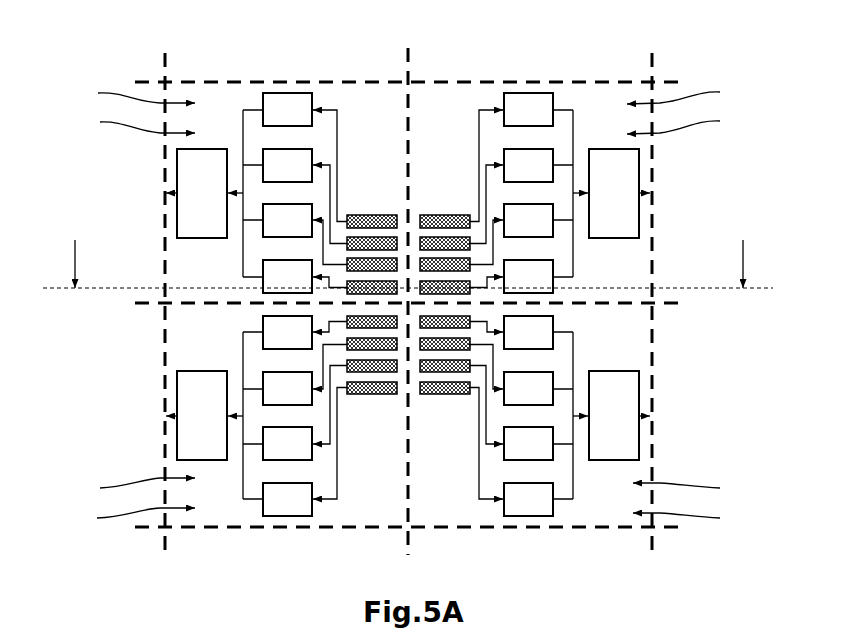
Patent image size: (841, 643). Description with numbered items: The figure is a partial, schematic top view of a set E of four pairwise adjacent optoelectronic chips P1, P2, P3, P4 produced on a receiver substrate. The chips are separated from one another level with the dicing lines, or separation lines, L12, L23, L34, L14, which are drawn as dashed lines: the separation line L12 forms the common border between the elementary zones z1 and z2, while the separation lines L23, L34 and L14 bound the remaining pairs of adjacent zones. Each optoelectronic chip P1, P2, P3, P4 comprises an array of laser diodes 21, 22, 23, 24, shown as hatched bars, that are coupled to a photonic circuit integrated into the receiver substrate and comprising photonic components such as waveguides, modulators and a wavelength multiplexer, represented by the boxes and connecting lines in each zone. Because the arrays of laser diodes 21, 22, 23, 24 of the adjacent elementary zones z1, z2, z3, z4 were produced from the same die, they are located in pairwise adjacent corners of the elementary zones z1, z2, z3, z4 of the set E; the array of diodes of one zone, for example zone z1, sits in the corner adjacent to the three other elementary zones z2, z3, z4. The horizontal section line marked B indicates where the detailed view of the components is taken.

The set of pairwise adjacent optoelectronic chips E is at (133, 40).
The laser diode 21 is at (372, 214).
The laser diode 22 is at (445, 214).
The laser diode 23 is at (445, 395).
The laser diode 24 is at (372, 395).
The separation line L12 is at (409, 296).
The separation line L14 is at (134, 304).
The separation line L23 is at (428, 304).
The separation line L34 is at (409, 550).
The section line B- B is at (407, 264).
The elementary zone z1 is at (126, 93).
The elementary zone z2 is at (692, 93).
The elementary zone z3 is at (695, 516).
The elementary zone z4 is at (126, 516).
The optoelectronic chip P1 is at (126, 121).
The optoelectronic chip P2 is at (693, 121).
The optoelectronic chip P3 is at (696, 486).
The optoelectronic chip P4 is at (126, 486).